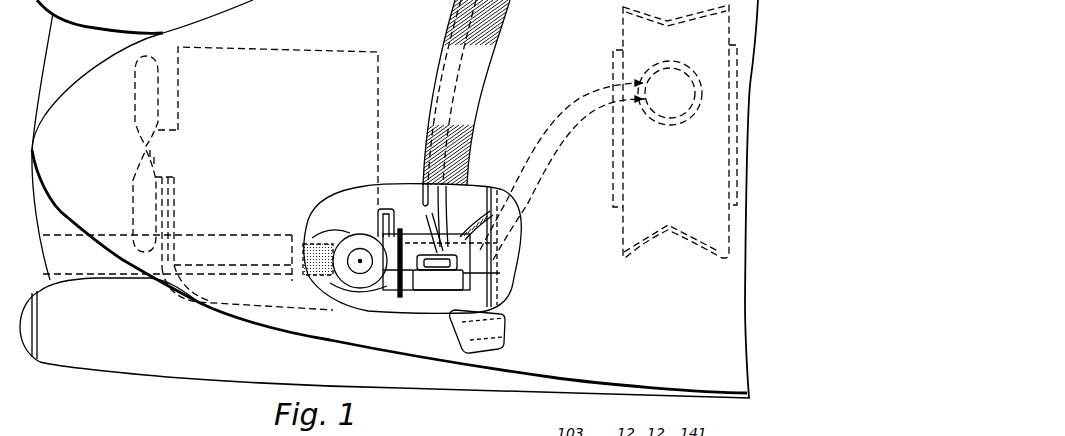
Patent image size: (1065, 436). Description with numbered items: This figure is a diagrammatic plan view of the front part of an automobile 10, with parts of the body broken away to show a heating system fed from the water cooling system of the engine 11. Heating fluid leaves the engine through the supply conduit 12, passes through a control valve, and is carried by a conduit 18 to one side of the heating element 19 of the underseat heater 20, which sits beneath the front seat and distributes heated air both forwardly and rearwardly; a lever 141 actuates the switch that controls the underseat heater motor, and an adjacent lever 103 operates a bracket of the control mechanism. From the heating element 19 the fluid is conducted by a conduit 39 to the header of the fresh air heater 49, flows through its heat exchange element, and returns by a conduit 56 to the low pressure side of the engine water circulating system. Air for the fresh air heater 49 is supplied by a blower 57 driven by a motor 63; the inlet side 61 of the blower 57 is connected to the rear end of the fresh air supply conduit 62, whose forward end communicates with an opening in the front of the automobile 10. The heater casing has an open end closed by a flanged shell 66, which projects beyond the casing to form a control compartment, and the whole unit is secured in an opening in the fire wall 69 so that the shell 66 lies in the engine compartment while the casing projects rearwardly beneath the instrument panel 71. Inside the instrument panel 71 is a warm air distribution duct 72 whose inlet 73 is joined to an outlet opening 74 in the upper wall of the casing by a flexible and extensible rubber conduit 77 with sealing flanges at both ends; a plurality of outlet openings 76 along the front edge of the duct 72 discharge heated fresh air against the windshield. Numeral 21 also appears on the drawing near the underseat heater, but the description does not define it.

The automobile 10 is at (77, 353).
The engine 11 is at (347, 212).
The supply conduit 12 is at (381, 208).
The conduit 18 is at (533, 177).
The heating element 19 is at (653, 123).
The underseat heater 20 is at (633, 256).
The side tab 21 is at (703, 260).
The conduit 39 is at (540, 197).
The fresh air heater 49 is at (494, 263).
The conduit 56 is at (353, 309).
The blower 57 is at (345, 240).
The inlet side of the blower 61 is at (316, 244).
The fresh air supply conduit 62 is at (208, 234).
The motor 63 is at (360, 257).
The flanged shell 66 is at (400, 300).
The fire wall 69 is at (403, 185).
The instrument panel 71 is at (483, 187).
The warm air distribution duct 72 is at (455, 77).
The inlet 73 is at (470, 223).
The outlet opening 74 is at (437, 290).
The outlet openings 76 is at (436, 214).
The flexible and extensible rubber conduit 77 is at (472, 276).
The lever 103 is at (451, 222).
The lever 141 is at (498, 231).